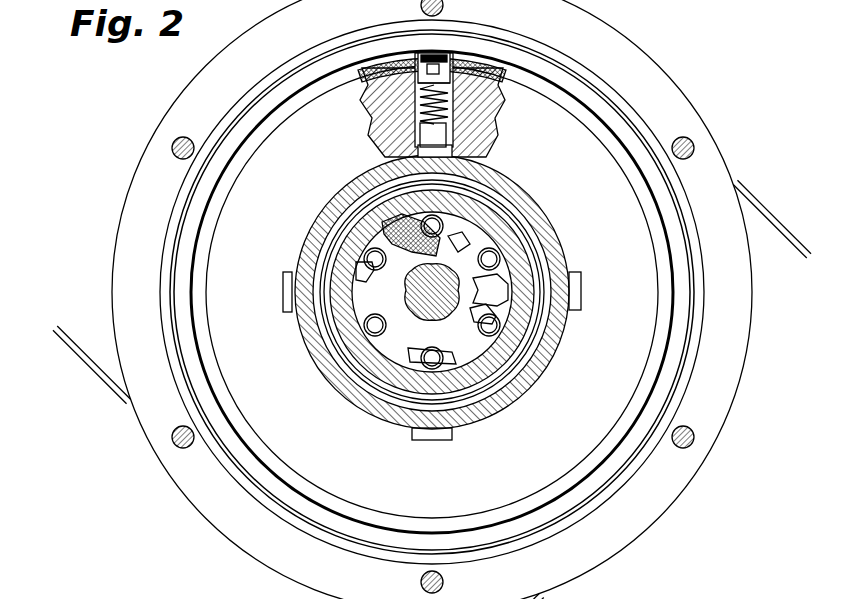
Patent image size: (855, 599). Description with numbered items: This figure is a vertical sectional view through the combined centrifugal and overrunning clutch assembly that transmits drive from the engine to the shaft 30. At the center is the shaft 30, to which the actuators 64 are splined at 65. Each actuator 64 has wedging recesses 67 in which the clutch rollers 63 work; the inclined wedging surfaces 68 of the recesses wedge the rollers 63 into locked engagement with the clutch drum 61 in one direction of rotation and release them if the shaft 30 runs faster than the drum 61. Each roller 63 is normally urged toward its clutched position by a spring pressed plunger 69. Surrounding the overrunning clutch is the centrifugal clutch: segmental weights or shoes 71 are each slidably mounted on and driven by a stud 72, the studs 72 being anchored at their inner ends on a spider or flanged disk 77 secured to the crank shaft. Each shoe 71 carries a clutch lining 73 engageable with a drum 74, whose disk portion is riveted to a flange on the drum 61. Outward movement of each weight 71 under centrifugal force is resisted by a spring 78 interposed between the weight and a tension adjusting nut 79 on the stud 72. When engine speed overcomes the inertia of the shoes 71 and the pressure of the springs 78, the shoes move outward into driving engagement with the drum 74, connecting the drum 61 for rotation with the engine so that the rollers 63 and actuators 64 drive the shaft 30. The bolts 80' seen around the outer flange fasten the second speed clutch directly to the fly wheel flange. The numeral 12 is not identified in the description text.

The housing 12 is at (652, 488).
The shaft 30 is at (425, 297).
The clutch drum 61 is at (518, 252).
The clutch rollers 63 is at (440, 352).
The actuators 64 is at (380, 402).
The spline 65 is at (487, 290).
The wedging recesses 67 is at (374, 281).
The wedging surfaces 68 is at (467, 321).
The spring pressed plunger 69 is at (455, 247).
The segmental weights 71 is at (556, 132).
The stud 72 is at (418, 138).
The clutch lining 73 is at (483, 58).
The drum 74 is at (181, 338).
The spider 77 is at (553, 354).
The spring 78 is at (418, 119).
The tension adjusting nut 79 is at (404, 56).
The bolts 80' is at (433, 296).